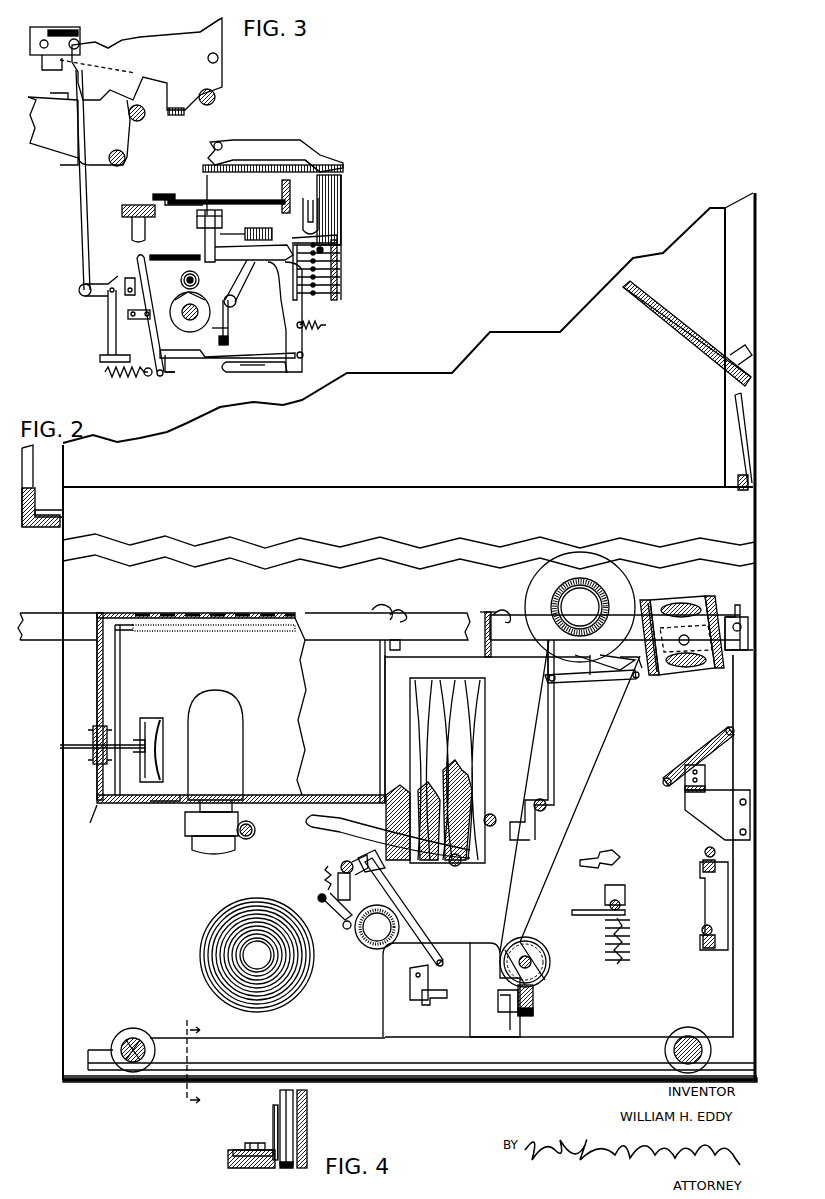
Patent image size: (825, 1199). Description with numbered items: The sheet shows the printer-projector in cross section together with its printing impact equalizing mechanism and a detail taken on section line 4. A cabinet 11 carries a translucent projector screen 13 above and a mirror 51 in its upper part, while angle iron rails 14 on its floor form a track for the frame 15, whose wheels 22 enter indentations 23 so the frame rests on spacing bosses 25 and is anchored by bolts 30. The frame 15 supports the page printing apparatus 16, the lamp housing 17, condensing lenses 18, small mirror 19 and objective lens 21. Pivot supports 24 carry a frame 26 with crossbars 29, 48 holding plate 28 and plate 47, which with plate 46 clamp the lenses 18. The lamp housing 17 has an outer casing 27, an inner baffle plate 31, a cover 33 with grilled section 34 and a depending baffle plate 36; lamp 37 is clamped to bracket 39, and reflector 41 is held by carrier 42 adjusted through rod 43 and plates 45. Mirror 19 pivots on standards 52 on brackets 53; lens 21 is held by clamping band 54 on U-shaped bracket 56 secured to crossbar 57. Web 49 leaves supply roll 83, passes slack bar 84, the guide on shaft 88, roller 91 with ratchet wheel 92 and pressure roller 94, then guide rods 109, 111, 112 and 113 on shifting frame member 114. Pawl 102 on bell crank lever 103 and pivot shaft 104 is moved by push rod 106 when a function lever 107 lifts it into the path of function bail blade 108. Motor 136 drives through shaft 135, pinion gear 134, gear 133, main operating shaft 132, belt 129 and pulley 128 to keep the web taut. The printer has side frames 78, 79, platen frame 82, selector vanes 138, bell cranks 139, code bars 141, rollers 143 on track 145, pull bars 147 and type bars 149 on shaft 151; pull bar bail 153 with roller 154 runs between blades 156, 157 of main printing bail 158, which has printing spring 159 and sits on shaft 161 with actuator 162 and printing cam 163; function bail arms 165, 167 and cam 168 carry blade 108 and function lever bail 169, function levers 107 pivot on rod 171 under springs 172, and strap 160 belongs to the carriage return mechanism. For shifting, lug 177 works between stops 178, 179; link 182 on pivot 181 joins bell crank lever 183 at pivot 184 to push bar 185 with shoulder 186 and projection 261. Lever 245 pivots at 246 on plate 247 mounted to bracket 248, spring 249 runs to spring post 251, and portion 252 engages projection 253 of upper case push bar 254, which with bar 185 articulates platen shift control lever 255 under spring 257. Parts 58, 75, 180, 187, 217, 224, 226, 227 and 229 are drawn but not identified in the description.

In FIG. 2, the cabinet 11 is at (766, 535).
In FIG. 2, the translucent projector screen 13 is at (35, 468).
In FIG. 2, the angle iron rails 14 is at (95, 1075).
In FIG. 4, the angle iron rails 14 is at (308, 1134).
In FIG. 2, the frame 15 is at (746, 1038).
In FIG. 4, the frame 15 is at (262, 1116).
In FIG. 2, the page printing apparatus 16 is at (646, 935).
In FIG. 2, the lamp housing 17 is at (87, 697).
In FIG. 2, the condensing lenses 18 is at (494, 768).
In FIG. 2, the small mirror 19 is at (735, 732).
In FIG. 2, the objective lens 21 is at (725, 605).
In FIG. 2, the wheels 22 is at (122, 1032).
In FIG. 4, the wheels 22 is at (280, 1097).
In FIG. 2, the indentations 23 is at (145, 1070).
In FIG. 4, the indentations 23 is at (286, 1170).
In FIG. 2, the pivot supports 24 is at (750, 632).
In FIG. 2, the spacing bosses 25 is at (215, 1060).
In FIG. 4, the spacing bosses 25 is at (228, 1152).
In FIG. 2, the frame 26 is at (402, 618).
In FIG. 2, the outer casing 27 is at (92, 815).
In FIG. 2, the plate 28 is at (379, 650).
In FIG. 2, the crossbar 29 is at (392, 605).
In FIG. 4, the bolts 30 is at (243, 1142).
In FIG. 2, the baffle plate 31 is at (120, 684).
In FIG. 2, the cover 33 is at (118, 615).
In FIG. 2, the grilled section 34 is at (190, 614).
In FIG. 2, the baffle plate 36 is at (245, 634).
In FIG. 2, the lamp 37 is at (243, 722).
In FIG. 2, the bracket 39 is at (185, 820).
In FIG. 2, the reflector 41 is at (168, 730).
In FIG. 2, the carrier 42 is at (155, 716).
In FIG. 2, the rod 43 is at (128, 748).
In FIG. 2, the plates 45 is at (97, 780).
In FIG. 2, the plate 46 is at (487, 757).
In FIG. 2, the plate 47 is at (486, 612).
In FIG. 2, the crossbar 48 is at (505, 612).
In FIG. 2, the record strip or web 49 is at (556, 742).
In FIG. 2, the mirror 51 is at (660, 327).
In FIG. 2, the standards 52 is at (708, 772).
In FIG. 2, the brackets 53 is at (720, 815).
In FIG. 2, the clamping band 54 is at (690, 596).
In FIG. 2, the U-shaped bracket 56 is at (652, 600).
In FIG. 2, the crossbar 57 is at (620, 650).
In FIG. 2, the link 58 is at (745, 432).
In FIG. 2, the hinge 75 is at (30, 530).
In FIG. 3, the side frame 78 is at (86, 104).
In FIG. 3, the side frame 79 is at (60, 150).
In FIG. 2, the side frame 79 is at (315, 830).
In FIG. 3, the platen frame 82 is at (160, 40).
In FIG. 2, the supply roll 83 is at (215, 935).
In FIG. 2, the slack bar 84 is at (314, 900).
In FIG. 2, the shaft 88 is at (362, 940).
In FIG. 2, the roller 91 is at (352, 862).
In FIG. 2, the ratchet wheel 92 is at (395, 895).
In FIG. 2, the pressure roller 94 is at (340, 880).
In FIG. 2, the pawl member 102 is at (382, 868).
In FIG. 2, the bell crank lever 103 is at (443, 975).
In FIG. 2, the pivot shaft 104 is at (410, 976).
In FIG. 2, the push rod 106 is at (430, 1008).
In FIG. 3, the function lever 107 is at (246, 372).
In FIG. 3, the function bail blade 108 is at (229, 342).
In FIG. 2, the guide rod 109 is at (460, 866).
In FIG. 2, the guide rod 111 is at (495, 830).
In FIG. 2, the guide rod 112 is at (548, 803).
In FIG. 2, the guide rod 113 is at (560, 685).
In FIG. 2, the U-shaped shifting frame member 114 is at (624, 680).
In FIG. 2, the pulley 128 is at (550, 573).
In FIG. 2, the belt 129 is at (512, 922).
In FIG. 3, the main operating shaft 132 is at (185, 322).
In FIG. 2, the main operating shaft 132 is at (531, 962).
In FIG. 2, the gear 133 is at (552, 960).
In FIG. 2, the pinion gear 134 is at (535, 1003).
In FIG. 2, the shaft 135 is at (505, 1015).
In FIG. 2, the motor 136 is at (440, 950).
In FIG. 3, the selector vanes 138 is at (330, 240).
In FIG. 2, the selector vanes 138 is at (630, 950).
In FIG. 3, the bell cranks 139 is at (342, 214).
In FIG. 3, the curved code bars 141 is at (343, 182).
In FIG. 2, the rollers 143 is at (628, 886).
In FIG. 2, the track 145 is at (630, 913).
In FIG. 3, the pull bars 147 is at (322, 166).
In FIG. 3, the type bars 149 is at (300, 122).
In FIG. 2, the type bars 149 is at (598, 855).
In FIG. 3, the shaft 151 is at (222, 142).
In FIG. 3, the pull bar bail 153 is at (282, 196).
In FIG. 3, the roller 154 is at (213, 212).
In FIG. 3, the blade 156 is at (197, 213).
In FIG. 3, the blade 157 is at (208, 200).
In FIG. 3, the main printing bail 158 is at (197, 226).
In FIG. 3, the printing spring 159 is at (262, 226).
In FIG. 3, the strap 160 is at (254, 263).
In FIG. 3, the shaft 161 is at (237, 282).
In FIG. 3, the printing bail actuator 162 is at (236, 300).
In FIG. 3, the printing cam 163 is at (229, 315).
In FIG. 3, the arm 165 is at (188, 277).
In FIG. 3, the arm 167 is at (229, 330).
In FIG. 3, the function bail cam 168 is at (125, 300).
In FIG. 3, the function lever bail 169 is at (325, 252).
In FIG. 3, the pivot rod 171 is at (303, 355).
In FIG. 3, the springs 172 is at (320, 327).
In FIG. 3, the lug 177 is at (48, 38).
In FIG. 3, the adjustable stop 178 is at (78, 33).
In FIG. 3, the adjustable stop 179 is at (45, 72).
In FIG. 3, the contact stack 180 is at (297, 312).
In FIG. 3, the pivot 181 is at (108, 42).
In FIG. 3, the link 182 is at (79, 190).
In FIG. 3, the bell crank lever 183 is at (108, 348).
In FIG. 3, the pivot 184 is at (85, 284).
In FIG. 3, the push bar 185 is at (210, 360).
In FIG. 3, the shoulder 186 is at (266, 366).
In FIG. 3, the lug 187 is at (63, 93).
In FIG. 2, the bracket 217 is at (725, 900).
In FIG. 2, the screw 224 is at (703, 866).
In FIG. 2, the screw 226 is at (720, 852).
In FIG. 2, the screw 227 is at (700, 950).
In FIG. 2, the screw 229 is at (715, 940).
In FIG. 3, the lever 245 is at (186, 282).
In FIG. 3, the pivot 246 is at (130, 315).
In FIG. 3, the plate 247 is at (135, 318).
In FIG. 3, the bracket 248 is at (134, 270).
In FIG. 3, the spring 249 is at (150, 257).
In FIG. 3, the spring post 251 is at (205, 255).
In FIG. 3, the laterally extending portion 252 is at (170, 378).
In FIG. 3, the depending projection 253 is at (158, 377).
In FIG. 3, the upper case shift push bar 254 is at (178, 360).
In FIG. 3, the platen shift control lever 255 is at (105, 372).
In FIG. 3, the spring 257 is at (145, 374).
In FIG. 3, the projection 261 is at (220, 40).
In FIG. 2, the section line 4 is at (186, 1060).